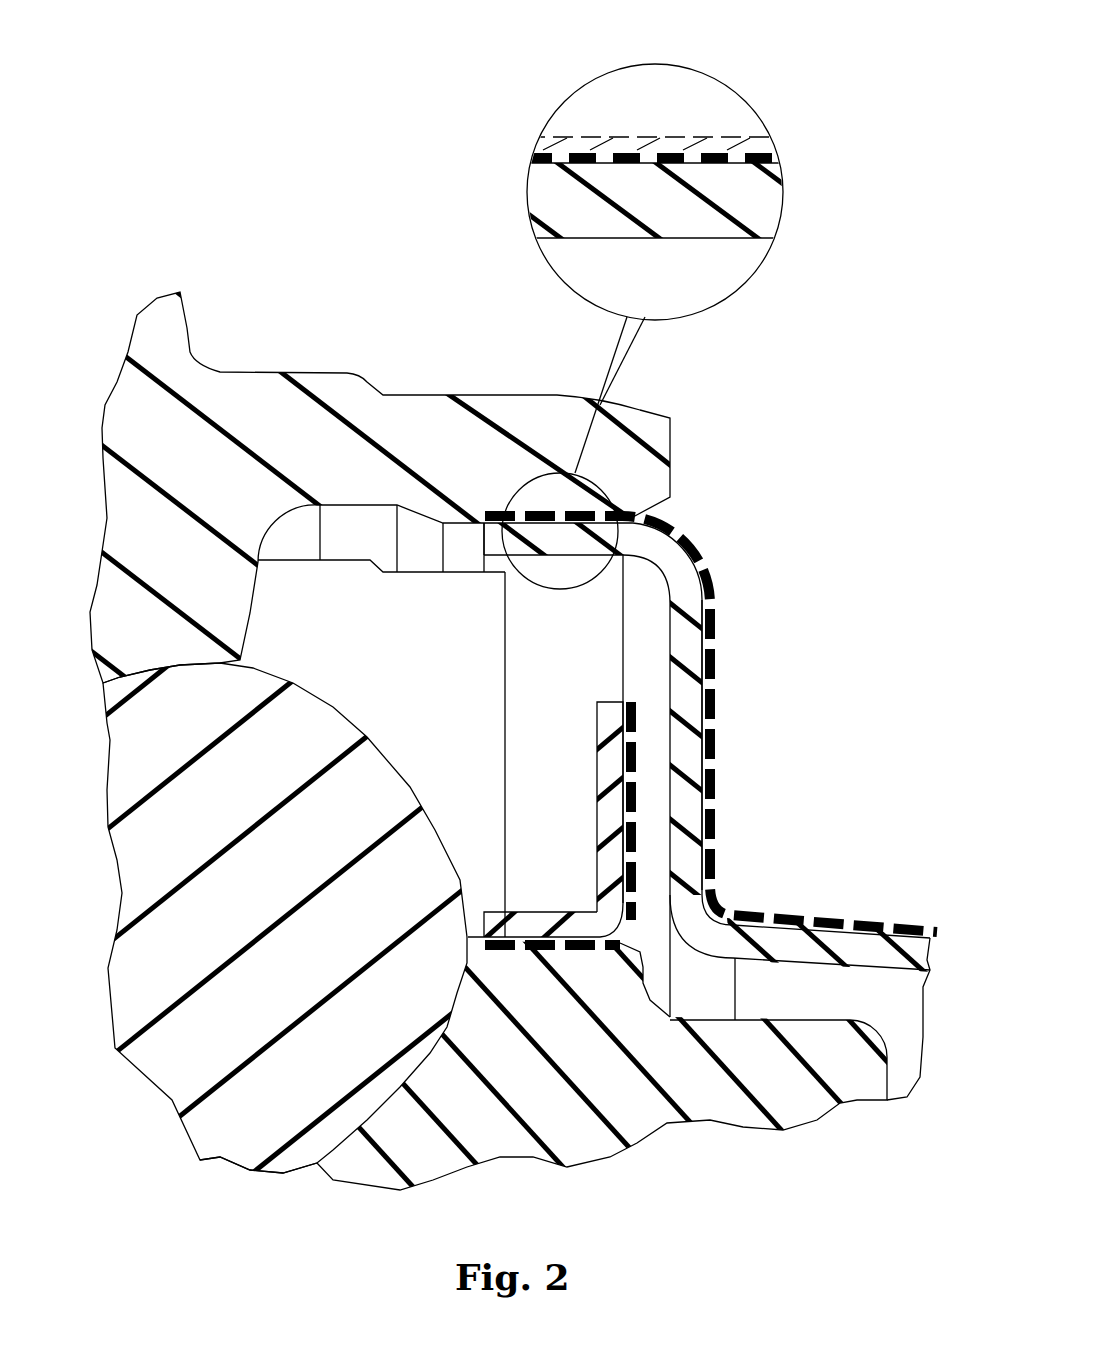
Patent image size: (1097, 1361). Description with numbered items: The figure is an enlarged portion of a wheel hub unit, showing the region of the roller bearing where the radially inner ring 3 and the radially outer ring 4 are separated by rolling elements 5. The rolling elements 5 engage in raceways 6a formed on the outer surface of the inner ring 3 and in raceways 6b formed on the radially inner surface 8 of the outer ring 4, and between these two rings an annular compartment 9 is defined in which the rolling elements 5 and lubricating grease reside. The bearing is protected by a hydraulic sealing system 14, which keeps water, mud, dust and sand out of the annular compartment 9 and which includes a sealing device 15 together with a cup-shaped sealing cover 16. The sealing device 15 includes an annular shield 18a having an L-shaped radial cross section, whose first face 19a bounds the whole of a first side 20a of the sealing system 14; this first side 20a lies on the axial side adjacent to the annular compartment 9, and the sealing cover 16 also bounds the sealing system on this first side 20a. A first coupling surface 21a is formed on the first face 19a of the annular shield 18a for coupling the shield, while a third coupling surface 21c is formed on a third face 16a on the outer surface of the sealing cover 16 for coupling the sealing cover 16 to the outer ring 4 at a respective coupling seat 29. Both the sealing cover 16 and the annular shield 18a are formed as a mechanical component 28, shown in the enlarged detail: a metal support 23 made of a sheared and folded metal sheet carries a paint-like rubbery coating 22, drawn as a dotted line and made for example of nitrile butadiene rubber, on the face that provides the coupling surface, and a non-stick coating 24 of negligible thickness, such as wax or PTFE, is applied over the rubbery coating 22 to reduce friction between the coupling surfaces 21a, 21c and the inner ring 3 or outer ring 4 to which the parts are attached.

The radially inner ring 3 is at (563, 1140).
The radially outer ring 4 is at (145, 400).
The rolling elements 5 is at (141, 987).
The raceways 6a is at (383, 1105).
The raceways 6b is at (172, 676).
The radially inner surface 8 is at (347, 565).
The annular compartment 9 is at (400, 645).
The hydraulic sealing system 14 is at (714, 153).
The sealing device 15 is at (545, 757).
The sealing cover 16 is at (905, 998).
The third face 16a is at (724, 733).
The annular shield 18a is at (606, 956).
The first face 19a is at (620, 855).
The first side 20a is at (815, 843).
The first coupling surface 21a is at (537, 925).
The third coupling surface 21c is at (622, 503).
The rubbery coating 22 is at (705, 543).
The metal support 23 is at (768, 200).
The non-stick coating 24 is at (633, 137).
The mechanical component 28 is at (536, 100).
The coupling seat 29 is at (580, 600).